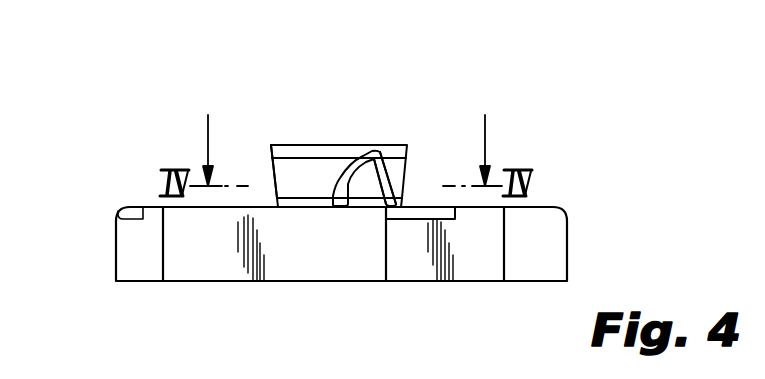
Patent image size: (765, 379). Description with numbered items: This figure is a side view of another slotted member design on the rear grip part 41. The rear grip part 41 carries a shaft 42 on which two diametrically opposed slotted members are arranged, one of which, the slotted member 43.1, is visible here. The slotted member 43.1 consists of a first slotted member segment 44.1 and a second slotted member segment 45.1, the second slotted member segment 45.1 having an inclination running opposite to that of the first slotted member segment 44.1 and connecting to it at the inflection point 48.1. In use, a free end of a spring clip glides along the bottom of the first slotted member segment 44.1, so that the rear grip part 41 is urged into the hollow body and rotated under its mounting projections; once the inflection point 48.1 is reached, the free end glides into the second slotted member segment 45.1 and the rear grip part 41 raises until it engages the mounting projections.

The rear grip part 41 is at (116, 261).
The shaft 42 is at (295, 173).
The slotted member 43.1 is at (358, 144).
The first slotted member segment 44.1 is at (330, 172).
The second slotted member segment 45.1 is at (382, 172).
The inflection point 48.1 is at (372, 155).